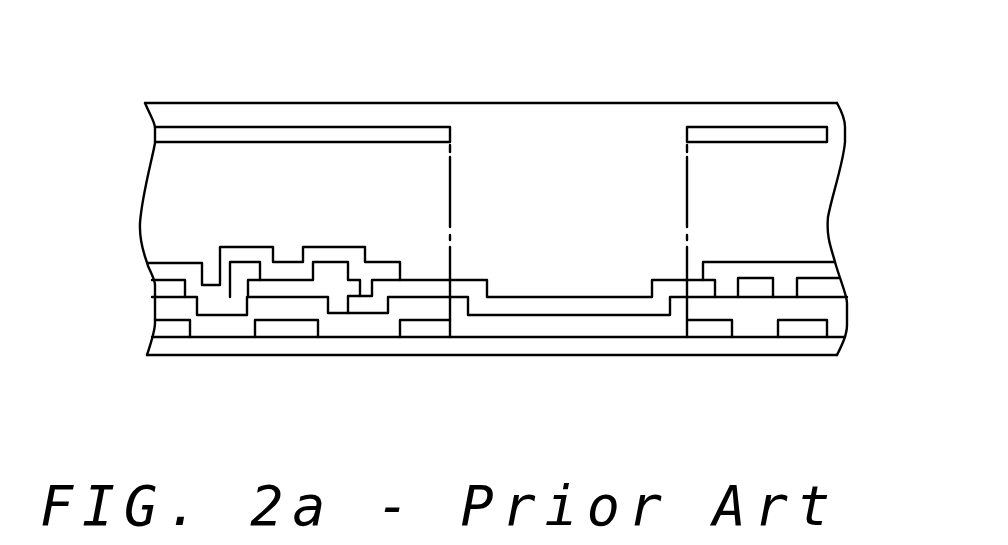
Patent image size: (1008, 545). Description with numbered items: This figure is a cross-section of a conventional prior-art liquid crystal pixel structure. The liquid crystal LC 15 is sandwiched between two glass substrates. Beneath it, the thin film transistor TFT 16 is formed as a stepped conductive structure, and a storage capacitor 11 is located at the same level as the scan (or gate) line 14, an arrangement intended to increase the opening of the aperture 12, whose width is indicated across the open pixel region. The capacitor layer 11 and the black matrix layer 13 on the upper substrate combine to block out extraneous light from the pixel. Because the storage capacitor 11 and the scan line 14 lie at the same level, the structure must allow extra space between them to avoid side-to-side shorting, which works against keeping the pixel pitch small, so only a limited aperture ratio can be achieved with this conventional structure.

The storage capacitor 11 is at (422, 330).
The aperture 12 is at (685, 198).
The black matrix layer 13 is at (189, 133).
The scan line 14 is at (290, 330).
The LC 15 is at (808, 203).
The thin film transistor 16 is at (292, 243).